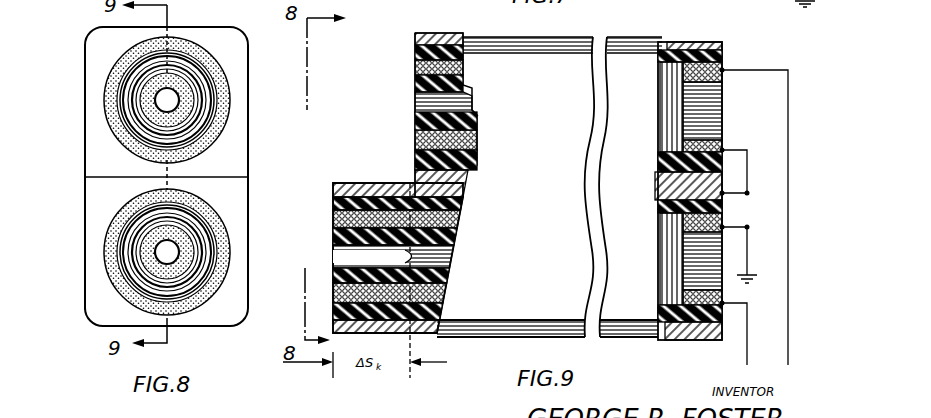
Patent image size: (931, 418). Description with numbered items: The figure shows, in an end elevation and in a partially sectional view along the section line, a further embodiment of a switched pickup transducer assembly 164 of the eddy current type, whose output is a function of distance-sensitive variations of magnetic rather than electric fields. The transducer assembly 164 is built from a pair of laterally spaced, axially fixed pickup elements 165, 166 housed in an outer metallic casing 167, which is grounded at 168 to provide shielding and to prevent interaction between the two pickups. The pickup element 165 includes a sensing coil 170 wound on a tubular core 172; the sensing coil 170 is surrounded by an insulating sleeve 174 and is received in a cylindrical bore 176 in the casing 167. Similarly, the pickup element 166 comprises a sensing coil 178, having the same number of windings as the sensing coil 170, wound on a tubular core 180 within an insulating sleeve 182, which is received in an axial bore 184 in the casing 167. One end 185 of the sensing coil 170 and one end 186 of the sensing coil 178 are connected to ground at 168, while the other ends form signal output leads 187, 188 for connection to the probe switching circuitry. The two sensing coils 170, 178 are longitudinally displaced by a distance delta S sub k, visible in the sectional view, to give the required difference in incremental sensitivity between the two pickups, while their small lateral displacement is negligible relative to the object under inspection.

In FIG. 8, the switched pickup transducer assembly 164 is at (112, 46).
In FIG. 9, the switched pickup transducer assembly 164 is at (412, 22).
In FIG. 8, the pickup element 165 is at (100, 92).
In FIG. 9, the pickup element 165 is at (405, 97).
In FIG. 8, the pickup element 166 is at (104, 220).
In FIG. 9, the pickup element 166 is at (327, 166).
In FIG. 8, the outer metallic casing 167 is at (94, 269).
In FIG. 9, the outer metallic casing 167 is at (426, 179).
In FIG. 9, the ground 168 is at (748, 184).
In FIG. 8, the sensing coil 170 is at (203, 76).
In FIG. 9, the sensing coil 170 is at (415, 70).
In FIG. 8, the tubular core 172 is at (188, 99).
In FIG. 9, the tubular core 172 is at (415, 125).
In FIG. 8, the insulating sleeve 174 is at (205, 58).
In FIG. 9, the insulating sleeve 174 is at (415, 48).
In FIG. 9, the cylindrical bore 176 is at (445, 43).
In FIG. 8, the sensing coil 178 is at (198, 233).
In FIG. 9, the sensing coil 178 is at (415, 160).
In FIG. 8, the tubular core 180 is at (188, 250).
In FIG. 9, the tubular core 180 is at (335, 235).
In FIG. 8, the insulating sleeve 182 is at (215, 215).
In FIG. 9, the insulating sleeve 182 is at (335, 200).
In FIG. 9, the axial bore 184 is at (360, 185).
In FIG. 9, the end of sensing coil 185 is at (738, 150).
In FIG. 9, the end of sensing coil 186 is at (747, 229).
In FIG. 9, the signal output lead 187 is at (754, 68).
In FIG. 9, the signal output lead 188 is at (747, 346).